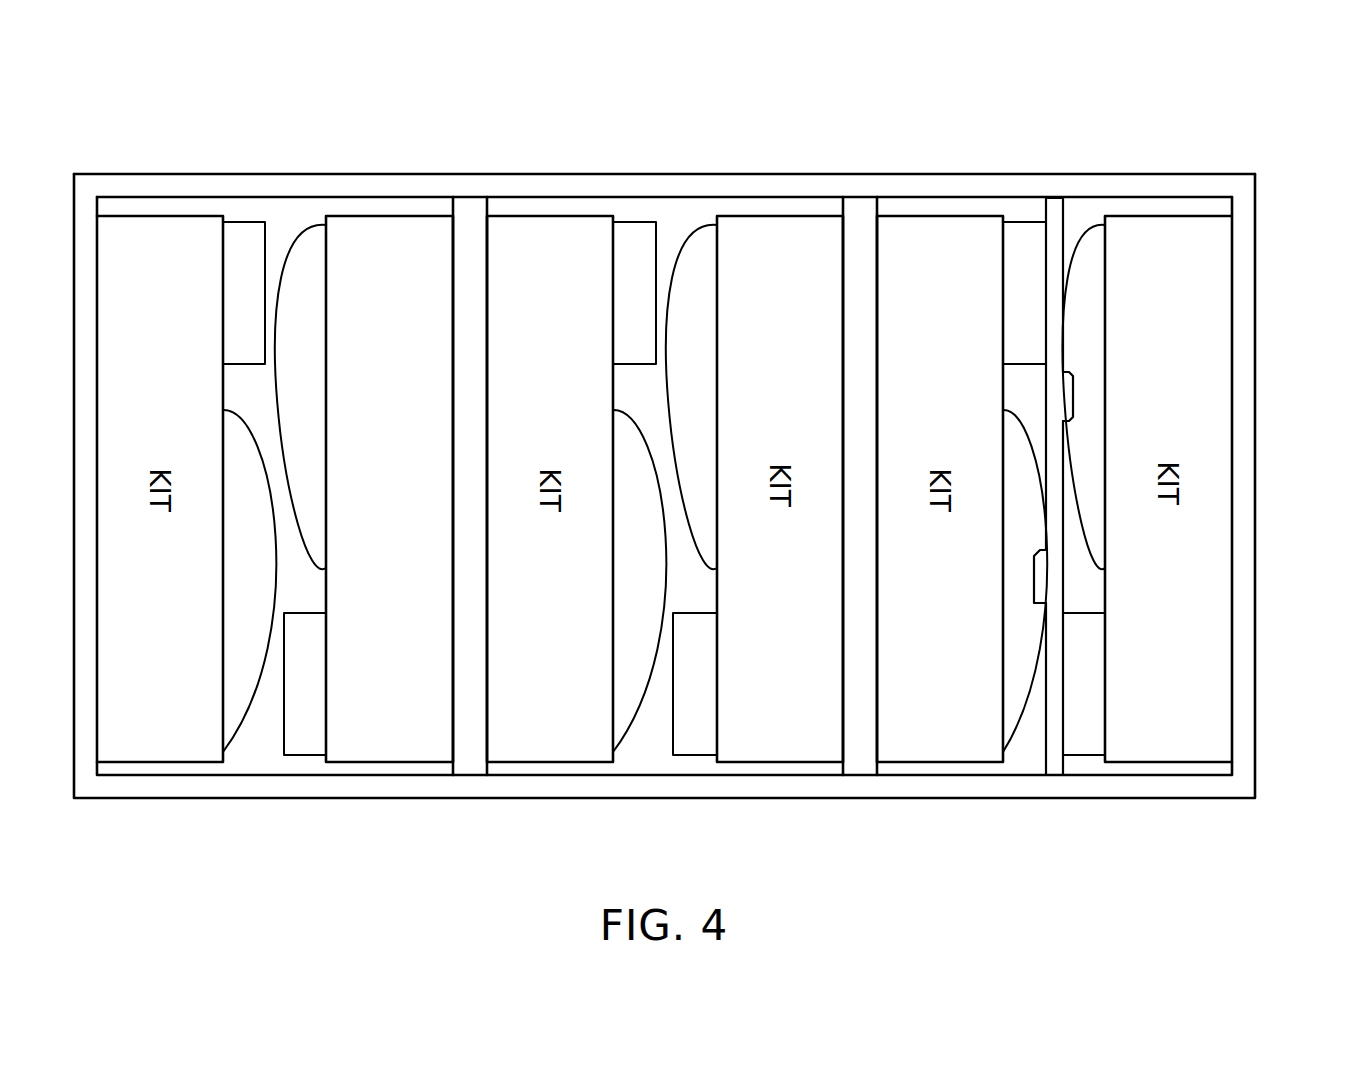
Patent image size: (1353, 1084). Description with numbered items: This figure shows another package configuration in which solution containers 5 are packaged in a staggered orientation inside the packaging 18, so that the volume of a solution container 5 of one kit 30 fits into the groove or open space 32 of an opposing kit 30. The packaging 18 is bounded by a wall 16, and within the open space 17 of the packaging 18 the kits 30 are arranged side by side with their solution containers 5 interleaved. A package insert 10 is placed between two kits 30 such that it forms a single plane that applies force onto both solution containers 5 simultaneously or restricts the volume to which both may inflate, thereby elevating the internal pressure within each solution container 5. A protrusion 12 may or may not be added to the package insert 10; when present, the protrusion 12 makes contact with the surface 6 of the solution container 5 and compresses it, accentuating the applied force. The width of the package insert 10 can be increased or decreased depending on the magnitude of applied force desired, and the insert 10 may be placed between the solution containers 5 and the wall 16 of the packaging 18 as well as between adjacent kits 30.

The solution container 5 is at (244, 714).
The surface 6 is at (1017, 710).
The package insert 10 is at (1054, 762).
The protrusion 12 is at (1067, 393).
The wall 16 is at (468, 185).
The open space 17 is at (679, 228).
The packaging 18 is at (237, 185).
The kit 30 is at (392, 733).
The groove or open space 32 is at (700, 593).